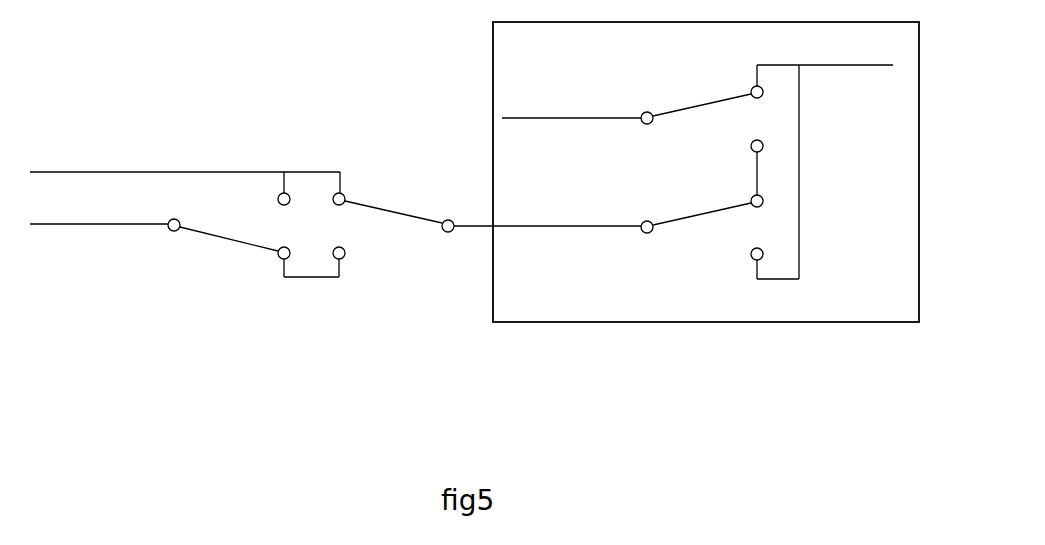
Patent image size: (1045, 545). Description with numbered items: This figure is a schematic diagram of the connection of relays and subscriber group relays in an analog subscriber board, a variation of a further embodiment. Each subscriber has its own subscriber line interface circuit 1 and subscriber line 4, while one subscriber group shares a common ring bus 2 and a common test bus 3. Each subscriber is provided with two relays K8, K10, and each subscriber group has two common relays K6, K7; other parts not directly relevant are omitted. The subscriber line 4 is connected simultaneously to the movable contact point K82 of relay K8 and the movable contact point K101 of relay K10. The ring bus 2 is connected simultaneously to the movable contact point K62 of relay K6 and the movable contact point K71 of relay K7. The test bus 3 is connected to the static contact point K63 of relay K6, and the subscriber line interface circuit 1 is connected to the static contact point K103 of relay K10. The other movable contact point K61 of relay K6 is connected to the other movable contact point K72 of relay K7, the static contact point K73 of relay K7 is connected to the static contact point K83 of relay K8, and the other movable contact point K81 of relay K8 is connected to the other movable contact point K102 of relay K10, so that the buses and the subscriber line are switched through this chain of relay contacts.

The subscriber line interface circuit 1 is at (700, 172).
The ring bus 2 is at (185, 168).
The test bus 3 is at (99, 210).
The subscriber line 4 is at (829, 157).
The relay K6 is at (245, 229).
The relay K7 is at (487, 229).
The relay K8 is at (707, 216).
The relay K10 is at (689, 124).
The movable contact point K61 is at (299, 255).
The movable contact point K62 is at (274, 192).
The static contact point K63 is at (214, 228).
The movable contact point K71 is at (387, 201).
The movable contact point K72 is at (350, 255).
The static contact point K73 is at (541, 219).
The movable contact point K81 is at (745, 179).
The movable contact point K82 is at (763, 257).
The static contact point K83 is at (683, 218).
The movable contact point K101 is at (744, 85).
The movable contact point K102 is at (745, 139).
The static contact point K103 is at (683, 109).